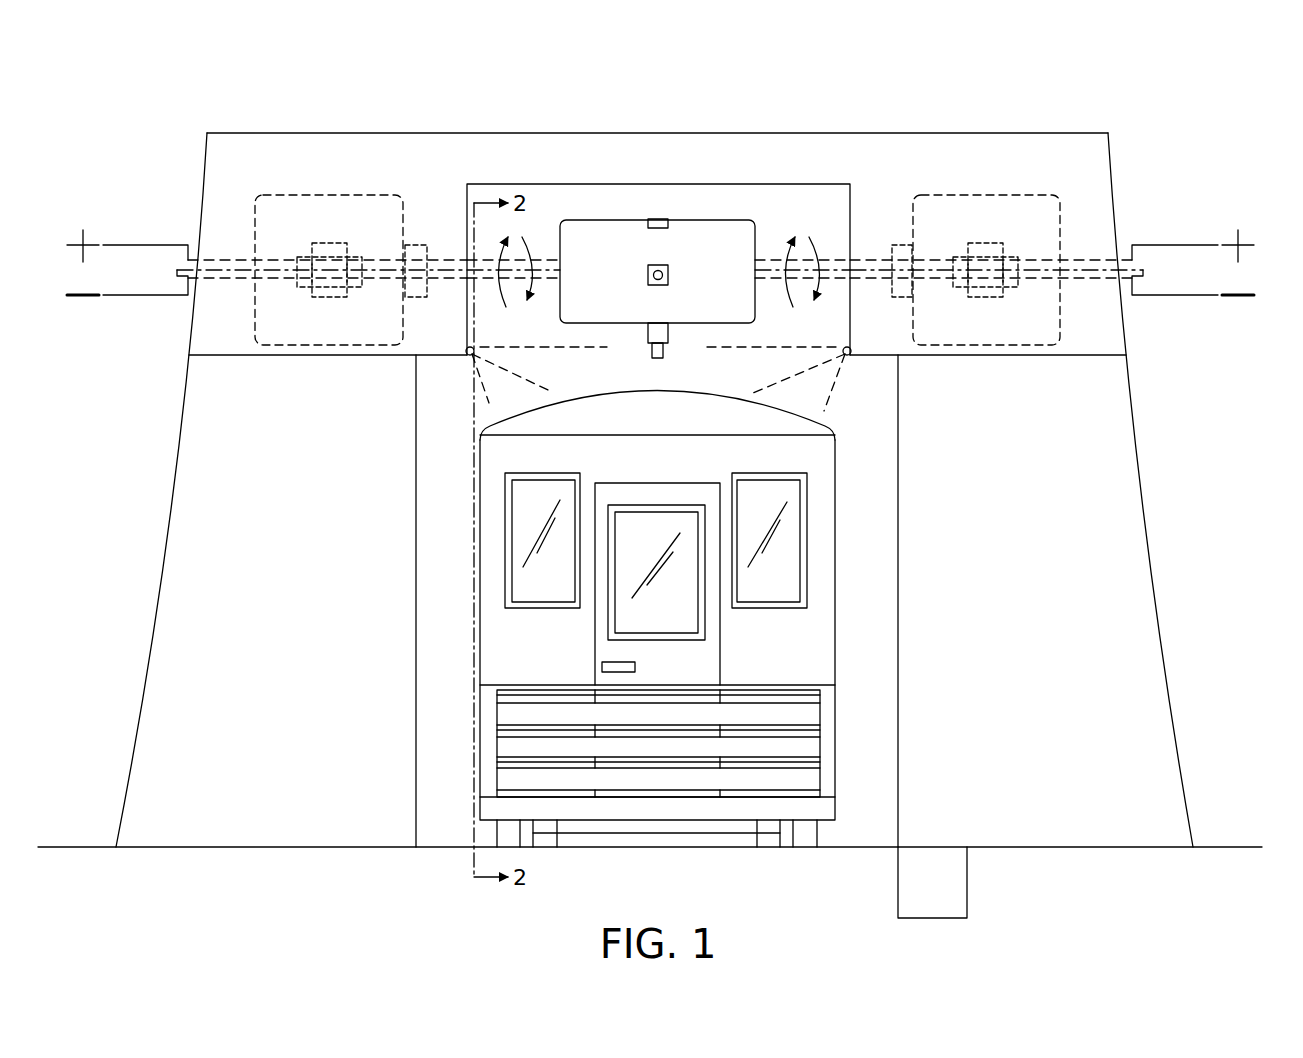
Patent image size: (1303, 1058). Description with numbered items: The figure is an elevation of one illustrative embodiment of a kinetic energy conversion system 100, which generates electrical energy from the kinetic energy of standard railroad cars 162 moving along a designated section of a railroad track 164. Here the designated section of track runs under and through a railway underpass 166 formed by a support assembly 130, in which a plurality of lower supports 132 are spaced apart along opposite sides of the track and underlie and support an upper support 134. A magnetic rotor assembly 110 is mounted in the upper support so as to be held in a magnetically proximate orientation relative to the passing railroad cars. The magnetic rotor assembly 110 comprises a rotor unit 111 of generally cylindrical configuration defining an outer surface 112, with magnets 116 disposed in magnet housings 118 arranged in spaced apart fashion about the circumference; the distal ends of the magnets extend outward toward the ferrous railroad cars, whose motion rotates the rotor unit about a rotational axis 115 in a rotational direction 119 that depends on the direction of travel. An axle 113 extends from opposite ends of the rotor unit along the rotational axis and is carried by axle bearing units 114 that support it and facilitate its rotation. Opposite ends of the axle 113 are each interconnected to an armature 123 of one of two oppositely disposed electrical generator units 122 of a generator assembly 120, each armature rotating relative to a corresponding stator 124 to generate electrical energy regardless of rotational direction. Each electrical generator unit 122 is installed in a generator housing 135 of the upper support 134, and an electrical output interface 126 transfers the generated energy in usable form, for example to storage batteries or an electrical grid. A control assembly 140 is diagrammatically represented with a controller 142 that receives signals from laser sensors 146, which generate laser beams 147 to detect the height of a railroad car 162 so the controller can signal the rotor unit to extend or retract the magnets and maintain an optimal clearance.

The kinetic energy conversion system 100 is at (1232, 78).
The magnetic rotor assembly 110 is at (672, 196).
The rotor unit 111 is at (595, 220).
The outer surface 112 is at (752, 258).
The axle 113 is at (540, 260).
The axle bearing unit 114 is at (430, 245).
The rotational axis 115 is at (178, 276).
The magnet 116 is at (661, 286).
The magnet housing 118 is at (653, 219).
The rotational direction 119 is at (508, 232).
The generator assembly 120 is at (1085, 186).
The electrical generator unit 122 is at (277, 195).
The armature 123 is at (357, 257).
The stator 124 is at (317, 243).
The electrical output interface 126 is at (223, 260).
The support assembly 130 is at (1222, 644).
The lower support 132 is at (232, 653).
The upper support 134 is at (230, 133).
The generator housing 135 is at (253, 180).
The control assembly 140 is at (1048, 914).
The controller 142 is at (963, 887).
The laser sensor 146 is at (470, 362).
The laser beam 147 is at (482, 412).
The railroad car 162 is at (837, 600).
The railroad track 164 is at (765, 838).
The railway underpass 166 is at (882, 404).